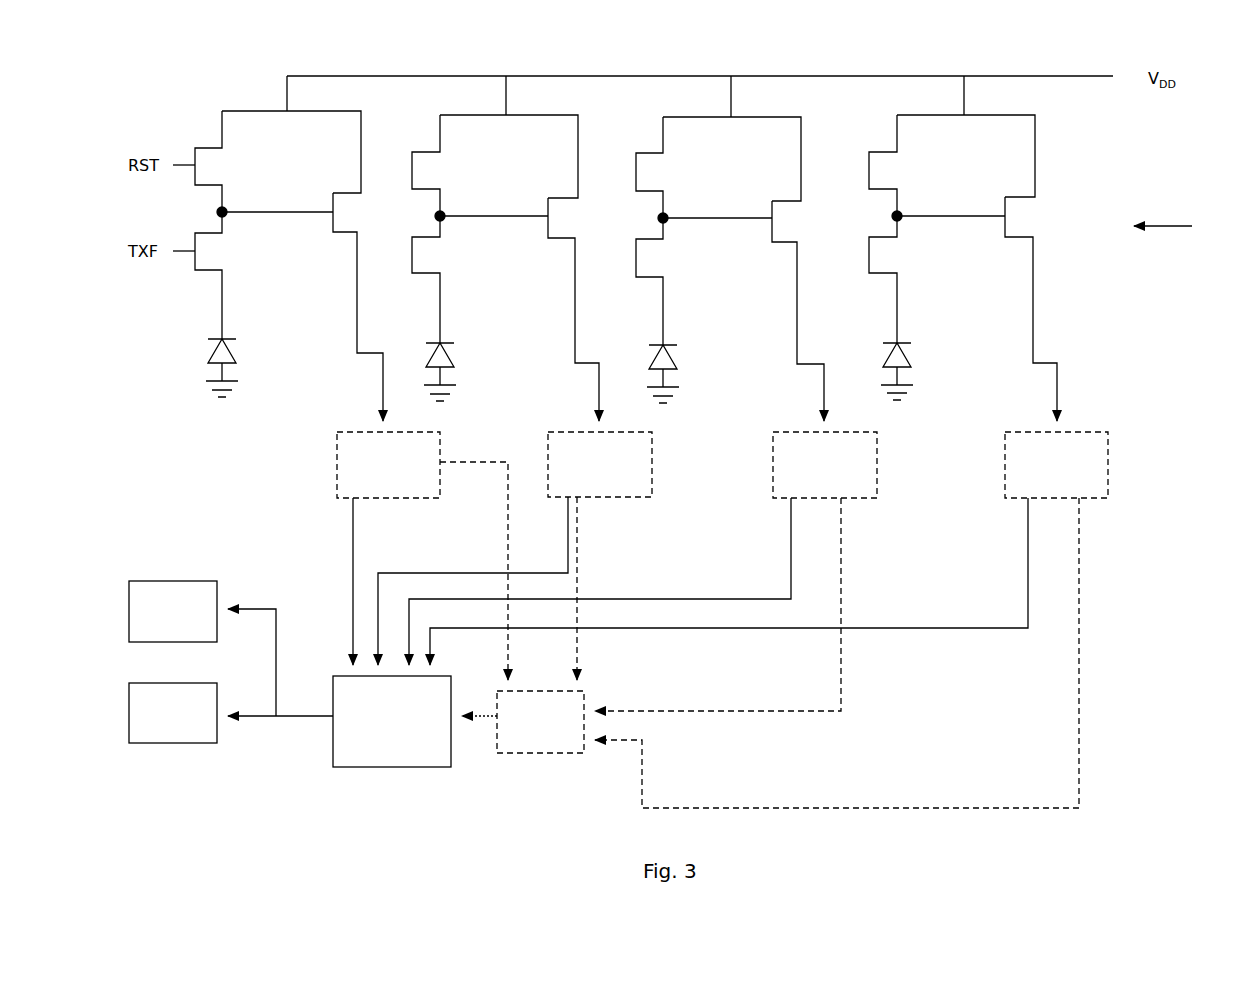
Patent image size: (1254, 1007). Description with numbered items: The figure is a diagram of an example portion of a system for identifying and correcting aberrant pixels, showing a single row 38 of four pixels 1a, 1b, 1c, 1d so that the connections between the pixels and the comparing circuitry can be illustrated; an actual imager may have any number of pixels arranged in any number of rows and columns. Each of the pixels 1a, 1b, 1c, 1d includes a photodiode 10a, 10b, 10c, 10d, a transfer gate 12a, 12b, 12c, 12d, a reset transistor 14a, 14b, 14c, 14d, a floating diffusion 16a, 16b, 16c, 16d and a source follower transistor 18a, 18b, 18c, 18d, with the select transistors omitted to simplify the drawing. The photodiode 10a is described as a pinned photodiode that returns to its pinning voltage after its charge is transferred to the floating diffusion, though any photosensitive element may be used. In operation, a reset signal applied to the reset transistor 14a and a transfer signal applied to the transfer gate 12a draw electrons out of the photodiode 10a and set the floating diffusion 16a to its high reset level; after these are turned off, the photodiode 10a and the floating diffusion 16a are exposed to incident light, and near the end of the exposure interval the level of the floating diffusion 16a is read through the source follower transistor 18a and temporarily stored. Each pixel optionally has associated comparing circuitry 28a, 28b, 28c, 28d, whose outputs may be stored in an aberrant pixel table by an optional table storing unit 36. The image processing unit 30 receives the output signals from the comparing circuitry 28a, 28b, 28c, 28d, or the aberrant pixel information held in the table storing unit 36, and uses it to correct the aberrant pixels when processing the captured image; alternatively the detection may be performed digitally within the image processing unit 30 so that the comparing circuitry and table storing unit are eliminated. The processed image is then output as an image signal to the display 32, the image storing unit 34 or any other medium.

The pixel 1a is at (254, 84).
The pixel 1b is at (469, 87).
The pixel 1c is at (694, 87).
The pixel 1d is at (924, 87).
The photodiode 10a is at (212, 352).
The photodiode 10b is at (448, 356).
The photodiode 10c is at (670, 360).
The photodiode 10d is at (903, 356).
The transfer gate 12a is at (193, 265).
The transfer gate 12b is at (430, 272).
The transfer gate 12c is at (652, 277).
The transfer gate 12d is at (885, 272).
The reset transistor 14a is at (193, 187).
The reset transistor 14b is at (423, 148).
The reset transistor 14c is at (634, 178).
The reset transistor 14d is at (883, 150).
The floating diffusion 16a is at (228, 207).
The floating diffusion 16b is at (443, 212).
The floating diffusion 16c is at (666, 214).
The floating diffusion 16d is at (900, 212).
The source follower transistor 18a is at (345, 192).
The source follower transistor 18b is at (562, 197).
The source follower transistor 18c is at (790, 238).
The source follower transistor 18d is at (1020, 195).
The comparing circuitry 28a is at (337, 456).
The comparing circuitry 28b is at (652, 452).
The comparing circuitry 28c is at (877, 462).
The comparing circuitry 28d is at (1108, 461).
The image processing unit 30 is at (382, 767).
The display 32 is at (168, 580).
The image storing unit 34 is at (172, 745).
The table storing unit 36 is at (538, 755).
The row 38 is at (1183, 228).